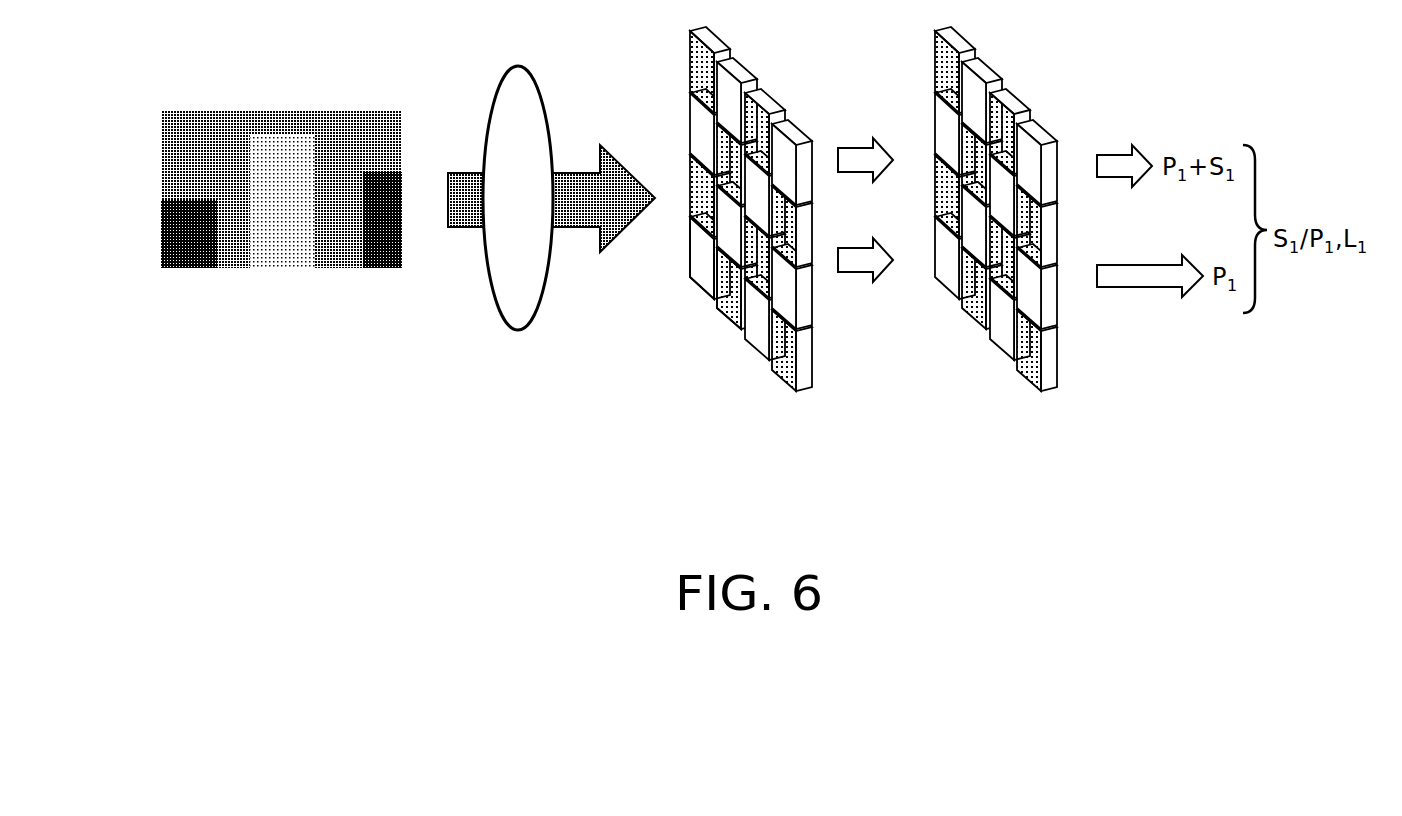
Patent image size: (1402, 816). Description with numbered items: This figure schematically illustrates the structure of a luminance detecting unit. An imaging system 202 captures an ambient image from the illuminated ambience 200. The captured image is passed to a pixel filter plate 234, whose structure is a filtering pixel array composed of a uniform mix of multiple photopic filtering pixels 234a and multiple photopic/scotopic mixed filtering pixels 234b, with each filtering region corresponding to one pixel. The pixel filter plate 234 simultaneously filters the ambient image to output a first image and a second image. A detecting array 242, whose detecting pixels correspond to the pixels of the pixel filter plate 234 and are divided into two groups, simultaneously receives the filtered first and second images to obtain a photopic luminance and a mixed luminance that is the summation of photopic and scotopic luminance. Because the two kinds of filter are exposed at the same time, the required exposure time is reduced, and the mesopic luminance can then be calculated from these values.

The illuminated ambience 200 is at (341, 120).
The imaging system 202 is at (518, 307).
The pixel filter plate 234 is at (738, 73).
The photopic filtering pixel 234a is at (689, 255).
The photopic/scotopic mixed filtering pixel 234b is at (723, 314).
The detecting array 242 is at (985, 73).